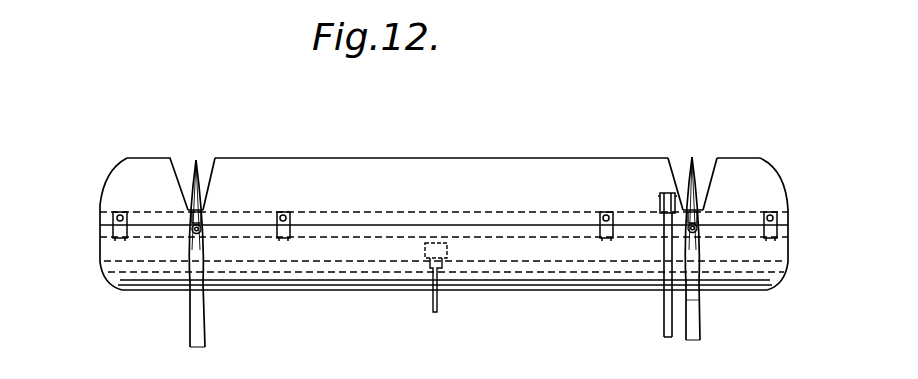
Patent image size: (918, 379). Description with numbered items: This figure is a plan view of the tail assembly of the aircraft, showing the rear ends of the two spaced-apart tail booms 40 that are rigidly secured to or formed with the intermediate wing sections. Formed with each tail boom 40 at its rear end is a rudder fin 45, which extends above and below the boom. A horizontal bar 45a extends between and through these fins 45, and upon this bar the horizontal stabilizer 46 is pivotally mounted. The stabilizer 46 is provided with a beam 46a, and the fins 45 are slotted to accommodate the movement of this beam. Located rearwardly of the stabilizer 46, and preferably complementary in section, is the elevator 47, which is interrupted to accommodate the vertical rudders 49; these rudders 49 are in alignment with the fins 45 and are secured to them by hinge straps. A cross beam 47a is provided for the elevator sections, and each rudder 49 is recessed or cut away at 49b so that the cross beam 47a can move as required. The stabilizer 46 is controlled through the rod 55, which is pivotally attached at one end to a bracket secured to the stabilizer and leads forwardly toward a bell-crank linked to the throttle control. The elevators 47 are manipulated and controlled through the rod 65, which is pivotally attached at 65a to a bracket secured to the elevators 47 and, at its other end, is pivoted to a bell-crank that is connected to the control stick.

The tail boom 40 is at (700, 327).
The rudder fin 45 is at (197, 275).
The horizontal bar 45a is at (140, 240).
The horizontal stabilizer 46 is at (355, 279).
The beam 46a is at (122, 273).
The elevator 47 is at (143, 172).
The cross beam 47a is at (527, 196).
The vertical rudder 49 is at (200, 167).
The recess 49b is at (203, 201).
The rod 55 is at (440, 302).
The rod 65 is at (664, 303).
The pivotal attachment 65a is at (662, 194).